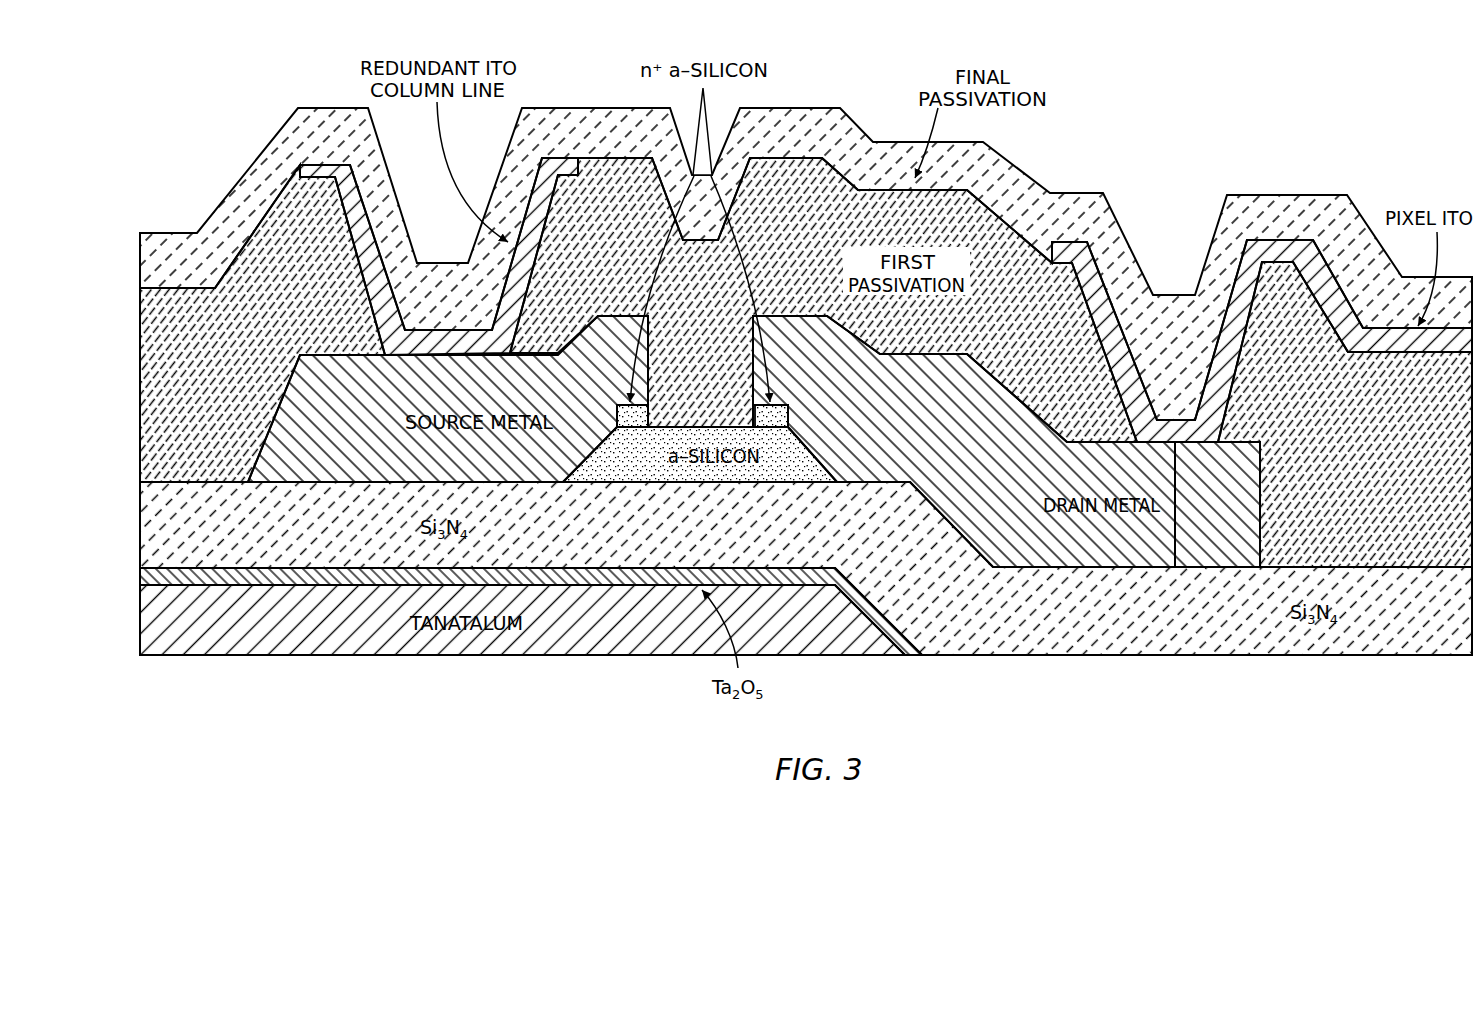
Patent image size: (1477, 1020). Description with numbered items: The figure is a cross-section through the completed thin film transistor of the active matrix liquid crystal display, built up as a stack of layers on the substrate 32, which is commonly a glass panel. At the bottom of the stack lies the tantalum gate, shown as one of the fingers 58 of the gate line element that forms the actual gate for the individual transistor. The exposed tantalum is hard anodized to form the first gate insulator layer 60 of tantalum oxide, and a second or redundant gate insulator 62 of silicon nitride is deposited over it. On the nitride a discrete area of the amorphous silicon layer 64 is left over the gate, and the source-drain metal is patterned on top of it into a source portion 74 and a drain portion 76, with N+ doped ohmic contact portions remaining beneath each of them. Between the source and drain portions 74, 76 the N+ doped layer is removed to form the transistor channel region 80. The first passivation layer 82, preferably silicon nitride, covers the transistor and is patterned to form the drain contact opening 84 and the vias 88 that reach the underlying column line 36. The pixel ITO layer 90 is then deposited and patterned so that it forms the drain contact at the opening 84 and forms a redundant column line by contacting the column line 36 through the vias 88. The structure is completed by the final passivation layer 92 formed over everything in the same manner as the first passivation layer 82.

The substrate 32 is at (806, 388).
The column line 36 is at (448, 474).
The finger 58 is at (585, 636).
The first gate insulator layer 60 is at (229, 586).
The second gate insulator 62 is at (1024, 657).
The amorphous silicon layer 64 is at (771, 483).
The source portion 74 is at (318, 405).
The drain portion 76 is at (925, 440).
The transistor channel region 80 is at (660, 428).
The first passivation layer 82 is at (1003, 232).
The drain contact opening 84 is at (1176, 445).
The via 88 is at (397, 360).
The pixel ITO layer 90 is at (886, 341).
The final passivation layer 92 is at (330, 108).